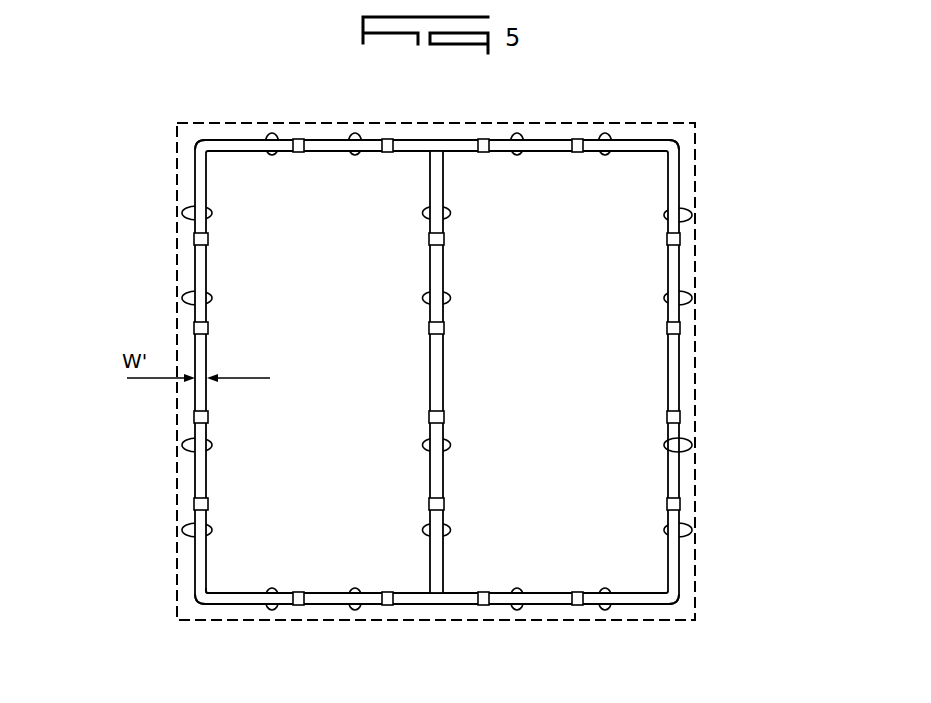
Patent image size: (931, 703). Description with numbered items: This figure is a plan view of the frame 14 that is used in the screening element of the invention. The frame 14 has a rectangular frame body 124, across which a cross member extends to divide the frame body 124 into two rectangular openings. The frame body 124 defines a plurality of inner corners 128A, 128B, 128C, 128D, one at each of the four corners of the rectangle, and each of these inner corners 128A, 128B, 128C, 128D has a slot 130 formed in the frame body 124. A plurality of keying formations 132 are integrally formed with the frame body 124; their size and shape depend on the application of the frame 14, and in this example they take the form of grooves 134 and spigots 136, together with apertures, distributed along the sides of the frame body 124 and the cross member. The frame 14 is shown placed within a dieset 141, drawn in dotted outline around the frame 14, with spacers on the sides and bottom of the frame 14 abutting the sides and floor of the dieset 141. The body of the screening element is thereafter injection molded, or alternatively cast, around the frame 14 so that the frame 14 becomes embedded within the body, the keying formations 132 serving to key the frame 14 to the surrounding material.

The frame 14 is at (139, 177).
The frame body 124 is at (675, 180).
The inner corner 128A is at (228, 157).
The inner corner 128B is at (658, 160).
The inner corner 128C is at (660, 586).
The inner corner 128D is at (228, 592).
The slot 130 is at (222, 578).
The keying formations 132 is at (700, 240).
The grooves 134 is at (444, 415).
The spigots 136 is at (686, 448).
The dieset 141 is at (695, 343).